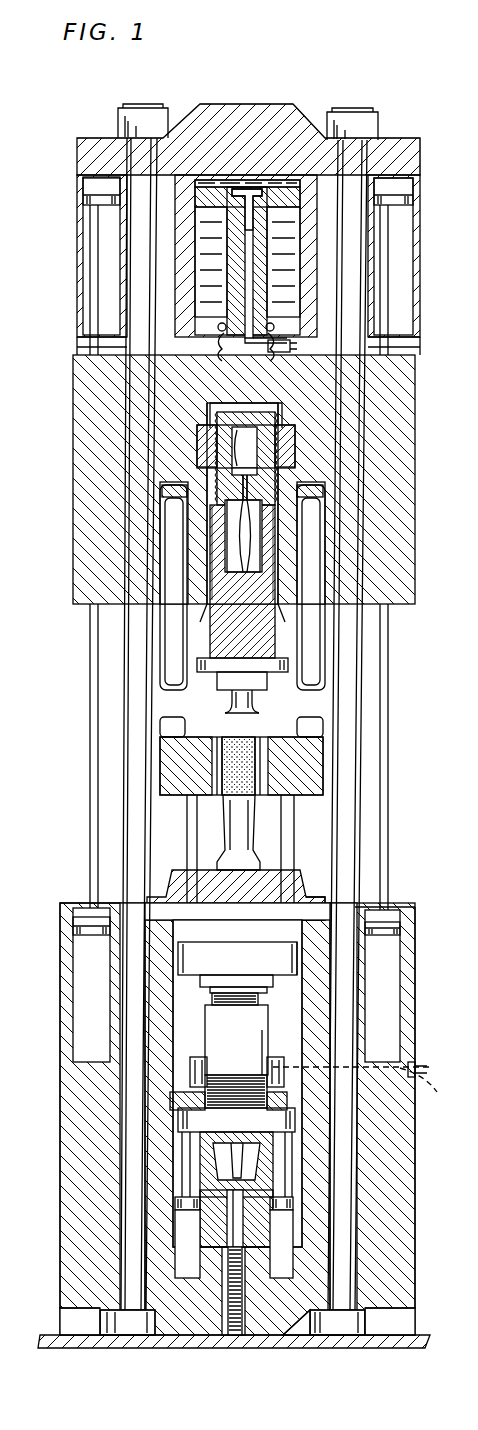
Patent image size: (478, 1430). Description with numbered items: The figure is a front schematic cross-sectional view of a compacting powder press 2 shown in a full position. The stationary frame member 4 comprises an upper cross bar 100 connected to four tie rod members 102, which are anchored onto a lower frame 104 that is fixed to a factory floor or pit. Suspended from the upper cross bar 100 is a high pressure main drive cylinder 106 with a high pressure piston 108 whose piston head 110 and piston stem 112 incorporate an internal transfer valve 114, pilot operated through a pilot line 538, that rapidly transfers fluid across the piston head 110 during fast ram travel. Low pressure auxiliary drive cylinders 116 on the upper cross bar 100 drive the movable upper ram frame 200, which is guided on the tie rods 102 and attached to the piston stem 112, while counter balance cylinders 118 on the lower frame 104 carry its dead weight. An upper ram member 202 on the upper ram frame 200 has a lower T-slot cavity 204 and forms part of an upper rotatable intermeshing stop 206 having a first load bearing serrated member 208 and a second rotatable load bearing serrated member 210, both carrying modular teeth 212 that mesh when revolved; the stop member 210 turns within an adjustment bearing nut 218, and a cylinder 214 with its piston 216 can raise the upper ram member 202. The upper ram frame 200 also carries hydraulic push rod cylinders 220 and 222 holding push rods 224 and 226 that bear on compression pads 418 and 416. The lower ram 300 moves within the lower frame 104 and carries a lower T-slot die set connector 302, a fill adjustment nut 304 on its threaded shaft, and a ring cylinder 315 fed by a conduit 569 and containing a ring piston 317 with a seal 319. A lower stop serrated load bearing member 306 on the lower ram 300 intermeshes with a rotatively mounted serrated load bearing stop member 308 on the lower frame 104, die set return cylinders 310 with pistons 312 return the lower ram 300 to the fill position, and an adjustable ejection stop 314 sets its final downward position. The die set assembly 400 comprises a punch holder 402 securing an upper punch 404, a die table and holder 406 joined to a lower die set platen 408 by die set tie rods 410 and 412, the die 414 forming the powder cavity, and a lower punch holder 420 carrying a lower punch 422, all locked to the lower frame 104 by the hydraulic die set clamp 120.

The press 2 is at (402, 98).
The frame member 4 is at (427, 168).
The upper cross bar 100 is at (270, 104).
The tie rod members 102 is at (352, 376).
The lower frame 104 is at (195, 1058).
The high pressure main drive cylinder 106 is at (322, 242).
The high pressure piston 108 is at (270, 300).
The piston head 110 is at (218, 160).
The piston stem 112 is at (220, 366).
The internal transfer valve 114 is at (262, 196).
The auxiliary drive cylinders 116 is at (78, 258).
The counter balance cylinders 118 is at (408, 978).
The hydraulic die set clamp 120 is at (312, 896).
The upper ram frame 200 is at (420, 408).
The upper ram member 202 is at (262, 607).
The lower T-slot cavity 204 is at (248, 642).
The upper rotatable intermeshing stop 206 is at (276, 534).
The first load bearing serrated member 208 is at (197, 594).
The second rotatable load bearing serrated member 210 is at (268, 487).
The modular teeth 212 is at (217, 558).
The cylinder 214 is at (300, 393).
The piston 216 is at (230, 403).
The adjustment bearing nut 218 is at (262, 443).
The hydraulic push rod cylinder 220 is at (170, 577).
The hydraulic push rod cylinder 222 is at (320, 560).
The push rod 224 is at (168, 653).
The push rod 226 is at (313, 631).
The lower ram 300 is at (268, 1033).
The lower T-slot die set connector 302 is at (237, 958).
The fill adjustment nut 304 is at (288, 1102).
The lower stop serrated load bearing member 306 is at (205, 1137).
The rotatively mounted serrated load bearing stop member 308 is at (214, 1249).
The die set return cylinders 310 is at (289, 1246).
The pistons 312 is at (291, 1199).
The adjustable ejection stop 314 is at (245, 1293).
The ring cylinder 315 is at (190, 1083).
The ring piston 317 is at (208, 1064).
The seal 319 is at (200, 1056).
The die set assembly 400 is at (176, 818).
The punch holder 402 is at (233, 699).
The upper punch 404 is at (226, 726).
The die table and holder 406 is at (160, 765).
The lower die set platen 408 is at (298, 961).
The die set tie rod 410 is at (292, 805).
The die set tie rod 412 is at (190, 842).
The die 414 is at (282, 762).
The compression pad 416 is at (320, 723).
The compression pad 418 is at (160, 724).
The lower punch holder 420 is at (245, 975).
The lower punch 422 is at (236, 895).
The pilot line 538 is at (270, 368).
The conduit 569 is at (375, 1085).